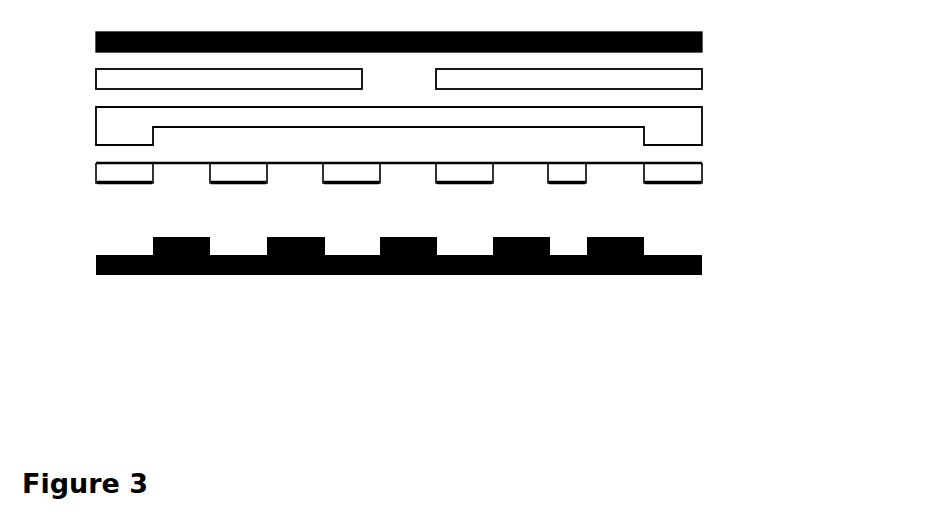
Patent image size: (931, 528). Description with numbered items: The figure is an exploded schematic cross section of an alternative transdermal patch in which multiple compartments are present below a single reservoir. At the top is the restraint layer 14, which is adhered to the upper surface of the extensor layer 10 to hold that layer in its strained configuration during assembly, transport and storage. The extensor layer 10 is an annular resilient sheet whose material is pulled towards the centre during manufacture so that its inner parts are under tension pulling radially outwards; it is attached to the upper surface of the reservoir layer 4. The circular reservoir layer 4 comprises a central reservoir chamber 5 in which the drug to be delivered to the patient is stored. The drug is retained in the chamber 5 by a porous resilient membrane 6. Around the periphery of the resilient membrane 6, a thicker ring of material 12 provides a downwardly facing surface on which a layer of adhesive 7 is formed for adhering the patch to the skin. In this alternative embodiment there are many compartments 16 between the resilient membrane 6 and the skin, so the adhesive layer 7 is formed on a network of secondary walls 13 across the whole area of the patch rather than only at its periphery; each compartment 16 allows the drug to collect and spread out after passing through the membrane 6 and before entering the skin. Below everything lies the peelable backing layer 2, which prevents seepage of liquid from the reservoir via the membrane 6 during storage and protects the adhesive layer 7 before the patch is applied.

The restraint layer 14 is at (702, 43).
The extensor layer 10 is at (702, 79).
The reservoir layer 4 is at (702, 120).
The porous resilient membrane 6 is at (630, 163).
The thicker ring of material 12 is at (690, 172).
The layer of adhesive 7 is at (587, 183).
The peelable backing layer 2 is at (702, 265).
The central reservoir chamber 5 is at (395, 135).
The secondary walls 13 is at (563, 172).
The compartment 16 is at (187, 172).